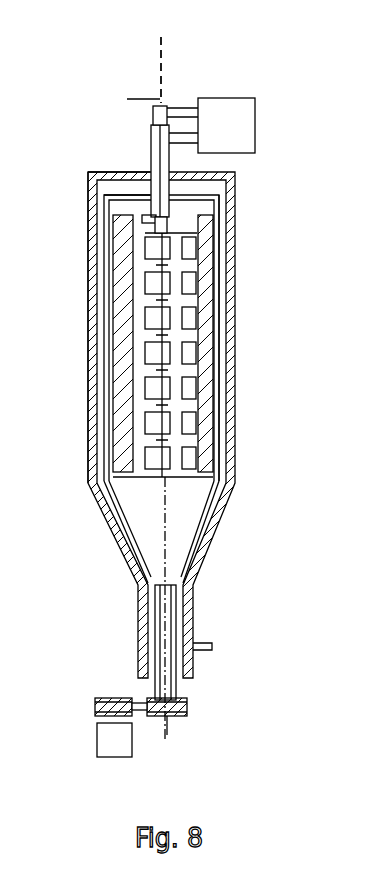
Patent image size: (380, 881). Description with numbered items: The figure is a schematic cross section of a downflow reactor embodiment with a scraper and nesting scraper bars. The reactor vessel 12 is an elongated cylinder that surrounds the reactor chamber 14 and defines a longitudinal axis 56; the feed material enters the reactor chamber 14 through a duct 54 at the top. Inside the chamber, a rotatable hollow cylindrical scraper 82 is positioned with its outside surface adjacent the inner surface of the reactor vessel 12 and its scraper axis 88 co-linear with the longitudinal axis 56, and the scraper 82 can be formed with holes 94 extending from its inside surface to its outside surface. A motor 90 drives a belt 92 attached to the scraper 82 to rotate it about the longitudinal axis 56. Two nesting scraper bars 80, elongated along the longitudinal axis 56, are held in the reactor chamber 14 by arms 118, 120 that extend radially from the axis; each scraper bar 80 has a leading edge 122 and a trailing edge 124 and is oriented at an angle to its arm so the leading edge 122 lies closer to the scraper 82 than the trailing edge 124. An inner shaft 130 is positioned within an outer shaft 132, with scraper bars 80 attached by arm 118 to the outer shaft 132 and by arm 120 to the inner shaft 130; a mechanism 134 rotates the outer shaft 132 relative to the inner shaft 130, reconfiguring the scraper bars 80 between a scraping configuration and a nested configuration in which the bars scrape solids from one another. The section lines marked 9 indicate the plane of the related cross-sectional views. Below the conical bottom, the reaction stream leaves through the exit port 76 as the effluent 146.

The reactor vessel 12 is at (232, 345).
The reactor chamber 14 is at (101, 350).
The scraper 82 is at (89, 293).
The leading edge 122 is at (95, 183).
The arm 118 is at (152, 220).
The arm 120 is at (215, 200).
The scraper bar 80 is at (206, 283).
The trailing edge 124 is at (196, 390).
The outer shaft 132 is at (151, 148).
The inner shaft 130 is at (154, 117).
The mechanism 134 is at (256, 86).
The duct 54 is at (141, 98).
The longitudinal axis 56 is at (161, 62).
The scraper axis 88 is at (161, 62).
The section line 9- 9 is at (237, 247).
The holes 94 is at (190, 470).
The exit port 76 is at (201, 651).
The effluent 146 is at (250, 648).
The belt 92 is at (137, 713).
The motor 90 is at (113, 757).